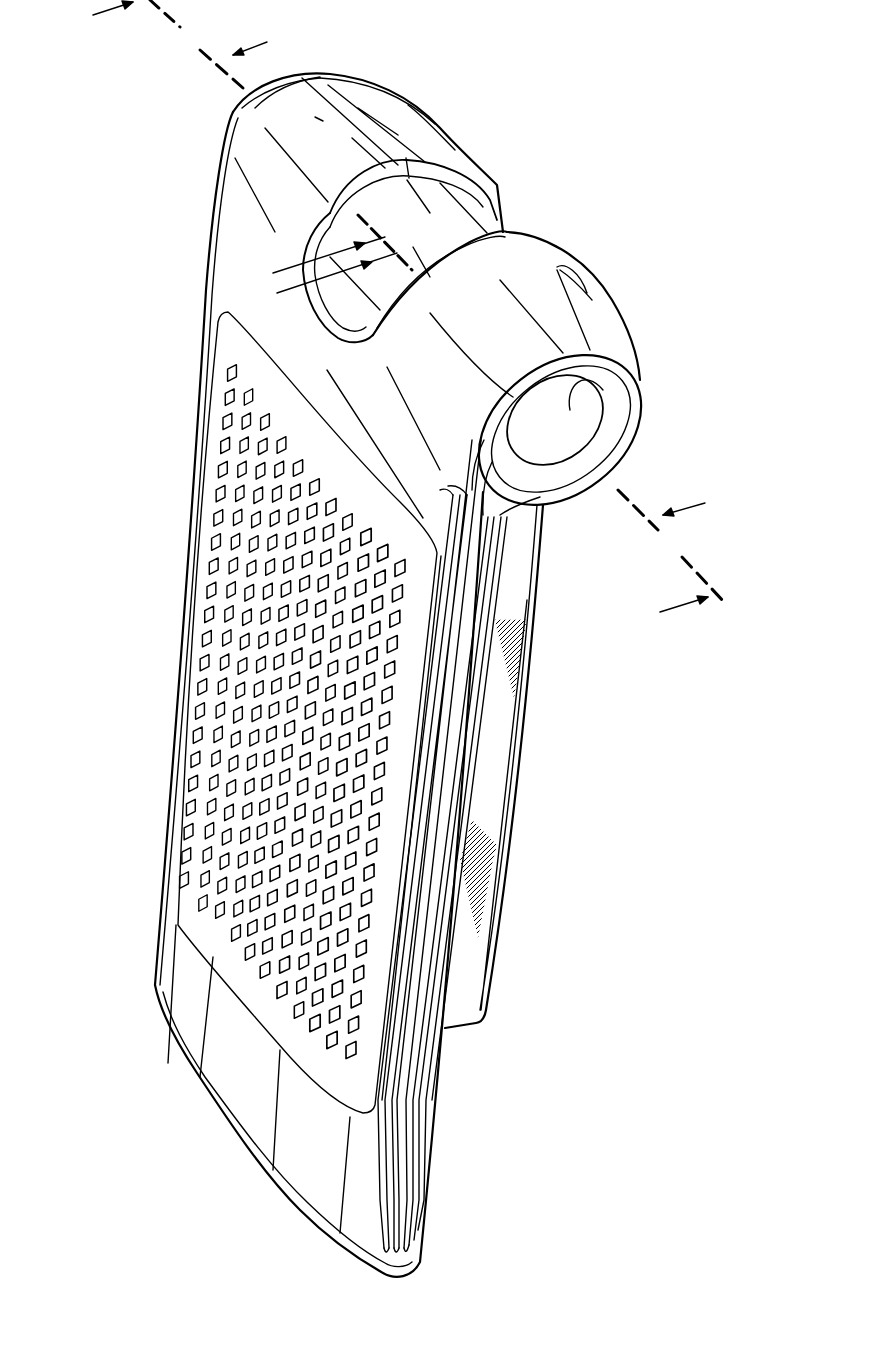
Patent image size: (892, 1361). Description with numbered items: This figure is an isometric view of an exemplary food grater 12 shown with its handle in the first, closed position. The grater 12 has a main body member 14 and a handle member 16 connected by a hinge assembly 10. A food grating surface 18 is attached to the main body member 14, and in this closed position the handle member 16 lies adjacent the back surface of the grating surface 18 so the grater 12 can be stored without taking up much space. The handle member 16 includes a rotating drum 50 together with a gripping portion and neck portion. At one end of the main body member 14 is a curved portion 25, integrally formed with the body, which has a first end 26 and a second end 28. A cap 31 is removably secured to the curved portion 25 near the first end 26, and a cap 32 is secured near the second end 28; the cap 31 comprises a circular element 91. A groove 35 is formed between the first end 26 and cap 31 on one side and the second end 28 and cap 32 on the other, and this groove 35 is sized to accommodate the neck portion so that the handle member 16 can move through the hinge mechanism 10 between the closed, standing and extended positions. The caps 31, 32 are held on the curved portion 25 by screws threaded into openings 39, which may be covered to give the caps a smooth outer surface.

The hinge assembly 10 is at (683, 377).
The food grater 12 is at (540, 137).
The main body member 14 is at (175, 918).
The handle member 16 is at (488, 785).
The food grating surface 18 is at (202, 615).
The curved portion 25 is at (243, 147).
The first end 26 is at (520, 494).
The second end 28 is at (247, 108).
The cap 31 is at (613, 437).
The cap 32 is at (352, 88).
The groove 35 is at (483, 183).
The openings 39 is at (417, 117).
The rotating drum 50 is at (483, 207).
The circular element 91 is at (570, 407).